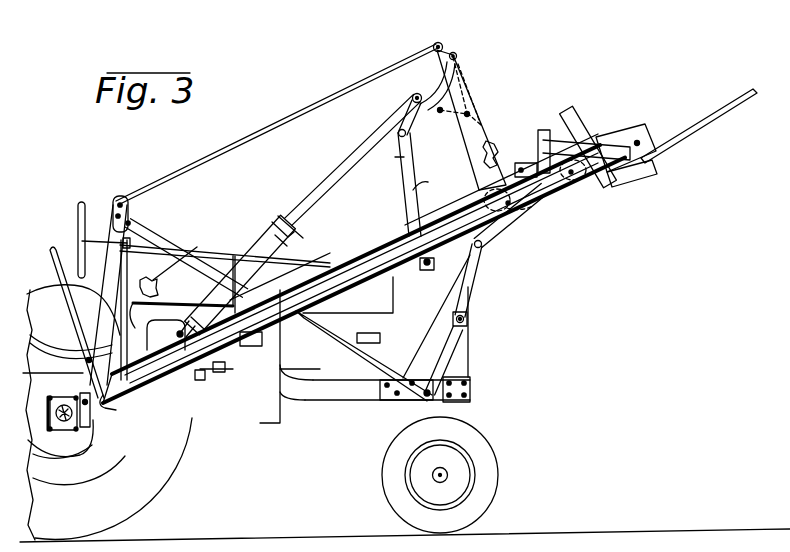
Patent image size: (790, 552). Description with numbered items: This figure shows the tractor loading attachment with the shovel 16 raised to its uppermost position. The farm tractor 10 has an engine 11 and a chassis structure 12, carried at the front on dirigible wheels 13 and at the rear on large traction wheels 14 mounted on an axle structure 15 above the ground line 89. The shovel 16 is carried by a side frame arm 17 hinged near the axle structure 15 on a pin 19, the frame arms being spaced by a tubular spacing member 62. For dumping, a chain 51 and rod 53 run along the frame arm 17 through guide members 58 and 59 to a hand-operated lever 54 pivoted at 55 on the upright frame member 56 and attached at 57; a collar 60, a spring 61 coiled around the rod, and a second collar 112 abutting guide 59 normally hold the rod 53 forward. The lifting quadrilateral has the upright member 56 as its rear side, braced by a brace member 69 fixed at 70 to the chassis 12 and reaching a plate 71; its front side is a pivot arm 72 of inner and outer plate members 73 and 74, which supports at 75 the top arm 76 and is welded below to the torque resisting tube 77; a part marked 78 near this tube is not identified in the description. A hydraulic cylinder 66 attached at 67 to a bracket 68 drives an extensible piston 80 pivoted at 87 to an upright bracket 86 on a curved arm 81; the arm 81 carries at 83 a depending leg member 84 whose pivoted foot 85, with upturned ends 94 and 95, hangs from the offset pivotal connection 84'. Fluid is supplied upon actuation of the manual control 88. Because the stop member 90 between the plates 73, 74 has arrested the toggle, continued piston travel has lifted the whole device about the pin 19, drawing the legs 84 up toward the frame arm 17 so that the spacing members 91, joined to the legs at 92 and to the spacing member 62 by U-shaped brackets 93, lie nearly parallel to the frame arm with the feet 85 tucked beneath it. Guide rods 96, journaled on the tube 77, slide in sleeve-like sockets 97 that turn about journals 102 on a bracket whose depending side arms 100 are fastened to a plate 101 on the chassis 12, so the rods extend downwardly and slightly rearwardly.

The farm tractor 10 is at (298, 249).
The engine 11 is at (370, 310).
The chassis structure 12 is at (337, 397).
The dirigible wheels 13 is at (498, 475).
The traction wheels 14 is at (150, 495).
The axle structure 15 is at (62, 428).
The shovel 16 is at (690, 127).
The side frame arm 17 is at (347, 258).
The pin 19 is at (97, 453).
The chain 51 is at (527, 160).
The rod 53 is at (382, 243).
The hand-operated lever 54 is at (53, 247).
The pivot 55 is at (88, 360).
The vertical frame member 56 is at (112, 268).
The attachment point 57 is at (108, 408).
The guide member 58 is at (220, 370).
The guide member 59 is at (447, 217).
The collar 60 is at (240, 310).
The spring 61 is at (250, 340).
The tubular spacing member 62 is at (455, 52).
The hydraulic cylinder 66 is at (257, 247).
The rear end attachment 67 is at (172, 322).
The bracket 68 is at (200, 380).
The brace member 69 is at (157, 237).
The attachment point 70 is at (422, 402).
The plate 71 is at (130, 215).
The pivot arm 72 is at (467, 70).
The inner plate member 73 is at (494, 140).
The outer plate member 74 is at (470, 93).
The pivotal support 75 is at (438, 42).
The top arm 76 is at (262, 137).
The torque resisting tube 77 is at (533, 203).
The roller 78 is at (525, 216).
The extensible piston 80 is at (337, 168).
The curved arm 81 is at (413, 135).
The pivotal connection 83 is at (400, 136).
The leg member 84 is at (395, 173).
The pivotal connection 84' is at (436, 316).
The foot 85 is at (470, 285).
The upright bracket 86 is at (425, 97).
The pivot point 87 is at (412, 97).
The manual control 88 is at (180, 257).
The ground line 89 is at (328, 536).
The stop member 90 is at (443, 113).
The spacing member 91 is at (497, 237).
The connecting point 92 is at (427, 265).
The U-shaped bracket 93 is at (590, 180).
The upwardly turned forward end 94 is at (477, 262).
The upwardly turned rearward end 95 is at (373, 337).
The guide rod 96 is at (482, 253).
The sleeve-like socket 97 is at (470, 318).
The depending side arm 100 is at (470, 365).
The plate 101 is at (457, 403).
The journal 102 is at (467, 323).
The second collar 112 is at (418, 192).